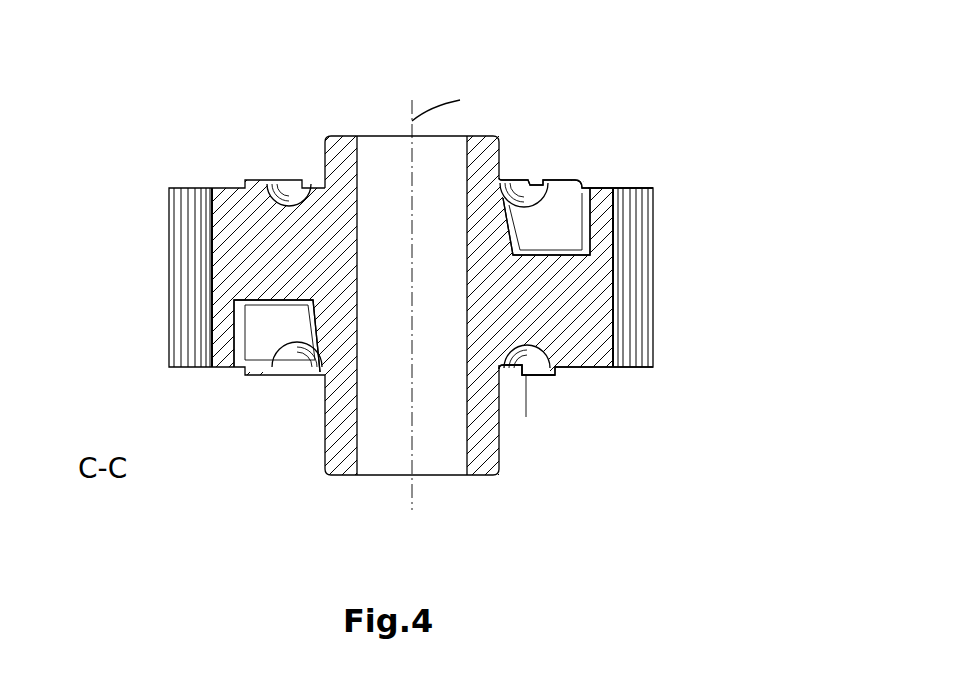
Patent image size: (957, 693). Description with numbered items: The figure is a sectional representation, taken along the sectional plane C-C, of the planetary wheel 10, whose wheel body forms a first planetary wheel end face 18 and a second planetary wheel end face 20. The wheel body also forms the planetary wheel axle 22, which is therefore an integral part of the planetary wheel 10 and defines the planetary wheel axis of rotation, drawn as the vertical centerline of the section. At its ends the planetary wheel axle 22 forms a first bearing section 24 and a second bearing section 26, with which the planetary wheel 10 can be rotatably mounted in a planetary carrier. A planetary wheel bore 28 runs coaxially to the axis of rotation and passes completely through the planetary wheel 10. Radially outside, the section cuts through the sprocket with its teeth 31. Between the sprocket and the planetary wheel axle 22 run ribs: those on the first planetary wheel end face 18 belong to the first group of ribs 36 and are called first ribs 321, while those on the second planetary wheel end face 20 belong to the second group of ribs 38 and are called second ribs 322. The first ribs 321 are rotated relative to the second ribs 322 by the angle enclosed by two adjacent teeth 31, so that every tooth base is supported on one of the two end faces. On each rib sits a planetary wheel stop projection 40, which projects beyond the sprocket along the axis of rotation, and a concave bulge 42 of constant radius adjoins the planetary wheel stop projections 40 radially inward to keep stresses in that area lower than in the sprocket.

The planetary wheel 10 is at (414, 258).
The first planetary wheel end face 18 is at (627, 368).
The second planetary wheel end face 20 is at (223, 188).
The planetary wheel axle 22 is at (502, 157).
The first bearing section 24 is at (325, 448).
The second bearing section 26 is at (576, 183).
The planetary wheel bore 28 is at (352, 134).
The teeth 31 is at (647, 188).
The first group of ribs 36 is at (572, 220).
The first ribs 321 is at (546, 221).
The second group of ribs 38 is at (257, 343).
The second ribs 322 is at (277, 336).
The planetary wheel stop projection 40 is at (260, 182).
The concave bulge 42 is at (507, 370).